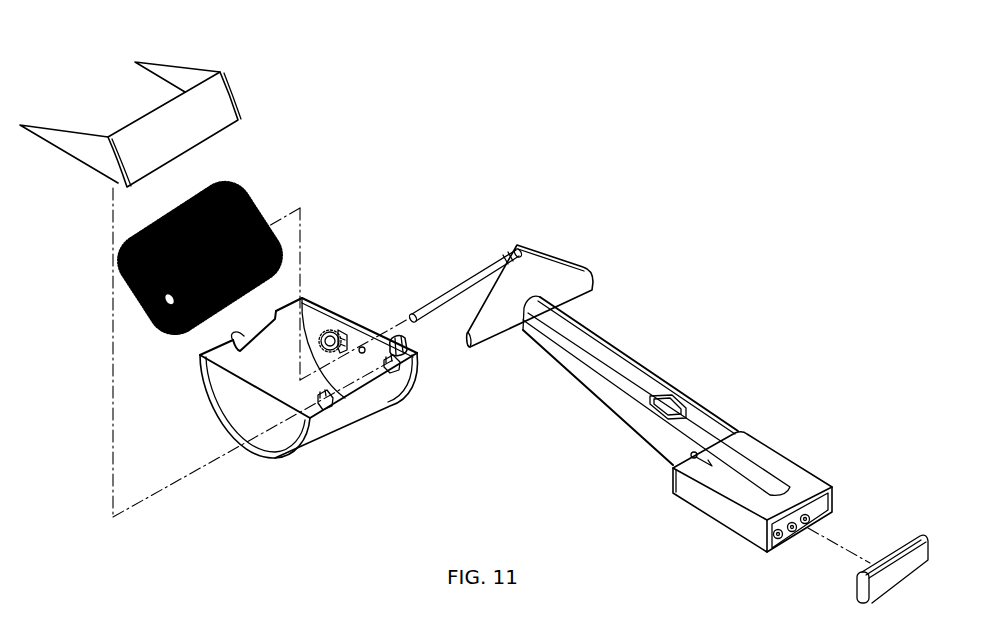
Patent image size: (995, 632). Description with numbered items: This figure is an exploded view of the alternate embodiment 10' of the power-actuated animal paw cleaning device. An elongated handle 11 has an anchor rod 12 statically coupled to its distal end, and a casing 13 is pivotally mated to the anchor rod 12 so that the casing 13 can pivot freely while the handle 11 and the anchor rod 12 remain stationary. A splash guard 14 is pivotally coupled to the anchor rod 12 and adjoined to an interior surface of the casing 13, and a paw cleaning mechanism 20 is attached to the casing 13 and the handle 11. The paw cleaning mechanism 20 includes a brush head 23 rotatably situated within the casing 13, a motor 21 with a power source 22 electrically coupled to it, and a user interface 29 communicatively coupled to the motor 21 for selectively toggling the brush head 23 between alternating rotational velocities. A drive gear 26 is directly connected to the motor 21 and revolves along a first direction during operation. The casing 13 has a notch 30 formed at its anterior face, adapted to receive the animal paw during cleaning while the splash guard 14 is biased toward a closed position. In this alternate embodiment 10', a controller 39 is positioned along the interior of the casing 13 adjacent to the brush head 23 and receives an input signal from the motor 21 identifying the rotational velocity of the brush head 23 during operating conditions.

The alternate embodiment of the power-actuated animal paw cleaning device 10' is at (547, 67).
The elongated handle 11 is at (649, 398).
The anchor rod 12 is at (450, 292).
The casing 13 is at (309, 361).
The splash guard 14 is at (220, 105).
The paw cleaning mechanism 20 is at (367, 266).
The motor 21 is at (340, 328).
The power source 22 is at (826, 516).
The brush head 23 is at (215, 192).
The drive gear 26 is at (323, 317).
The user interface 29 is at (675, 405).
The notch 30 is at (243, 340).
The controller 39 is at (407, 352).